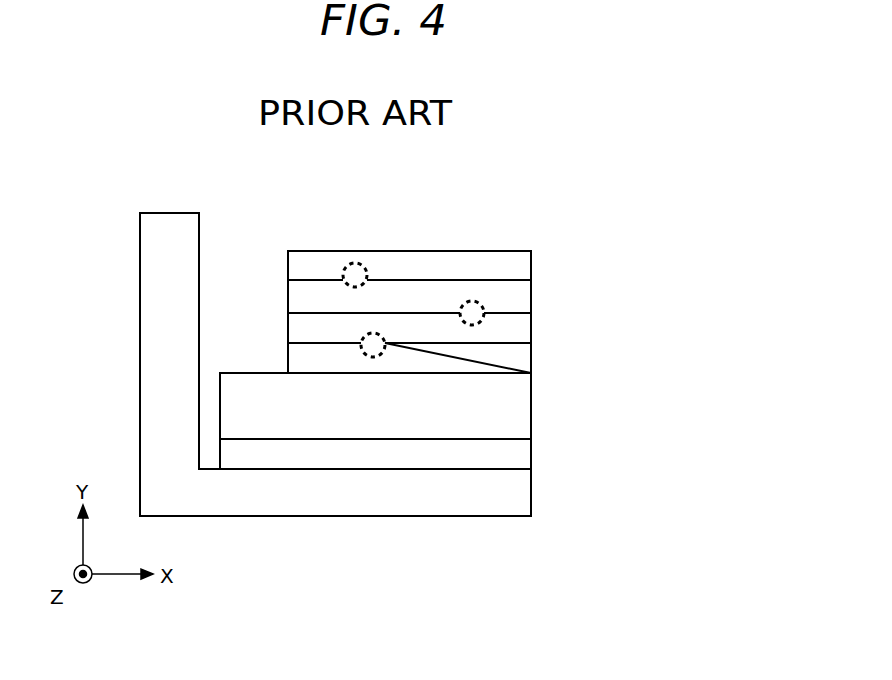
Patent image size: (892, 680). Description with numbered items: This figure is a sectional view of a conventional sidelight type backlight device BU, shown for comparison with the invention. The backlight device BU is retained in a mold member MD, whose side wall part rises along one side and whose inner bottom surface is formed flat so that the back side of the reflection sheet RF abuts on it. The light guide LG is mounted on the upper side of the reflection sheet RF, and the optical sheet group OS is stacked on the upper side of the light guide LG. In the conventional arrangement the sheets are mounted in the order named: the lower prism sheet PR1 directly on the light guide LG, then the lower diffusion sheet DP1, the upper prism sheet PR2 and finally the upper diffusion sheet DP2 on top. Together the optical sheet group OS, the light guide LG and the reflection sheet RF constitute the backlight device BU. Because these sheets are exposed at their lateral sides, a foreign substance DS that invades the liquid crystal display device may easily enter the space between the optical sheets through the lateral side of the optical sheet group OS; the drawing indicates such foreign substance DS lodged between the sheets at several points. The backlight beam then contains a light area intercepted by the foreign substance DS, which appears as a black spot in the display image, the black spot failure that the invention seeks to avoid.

The foreign substance DS is at (378, 338).
The upper diffusion sheet DP2 is at (475, 265).
The upper prism sheet PR2 is at (517, 296).
The lower diffusion sheet DP1 is at (513, 327).
The lower prism sheet PR1 is at (513, 357).
The optical sheet group OS is at (506, 310).
The backlight device BU is at (461, 364).
The light guide LG is at (516, 401).
The reflection sheet RF is at (516, 449).
The mold member MD is at (516, 491).